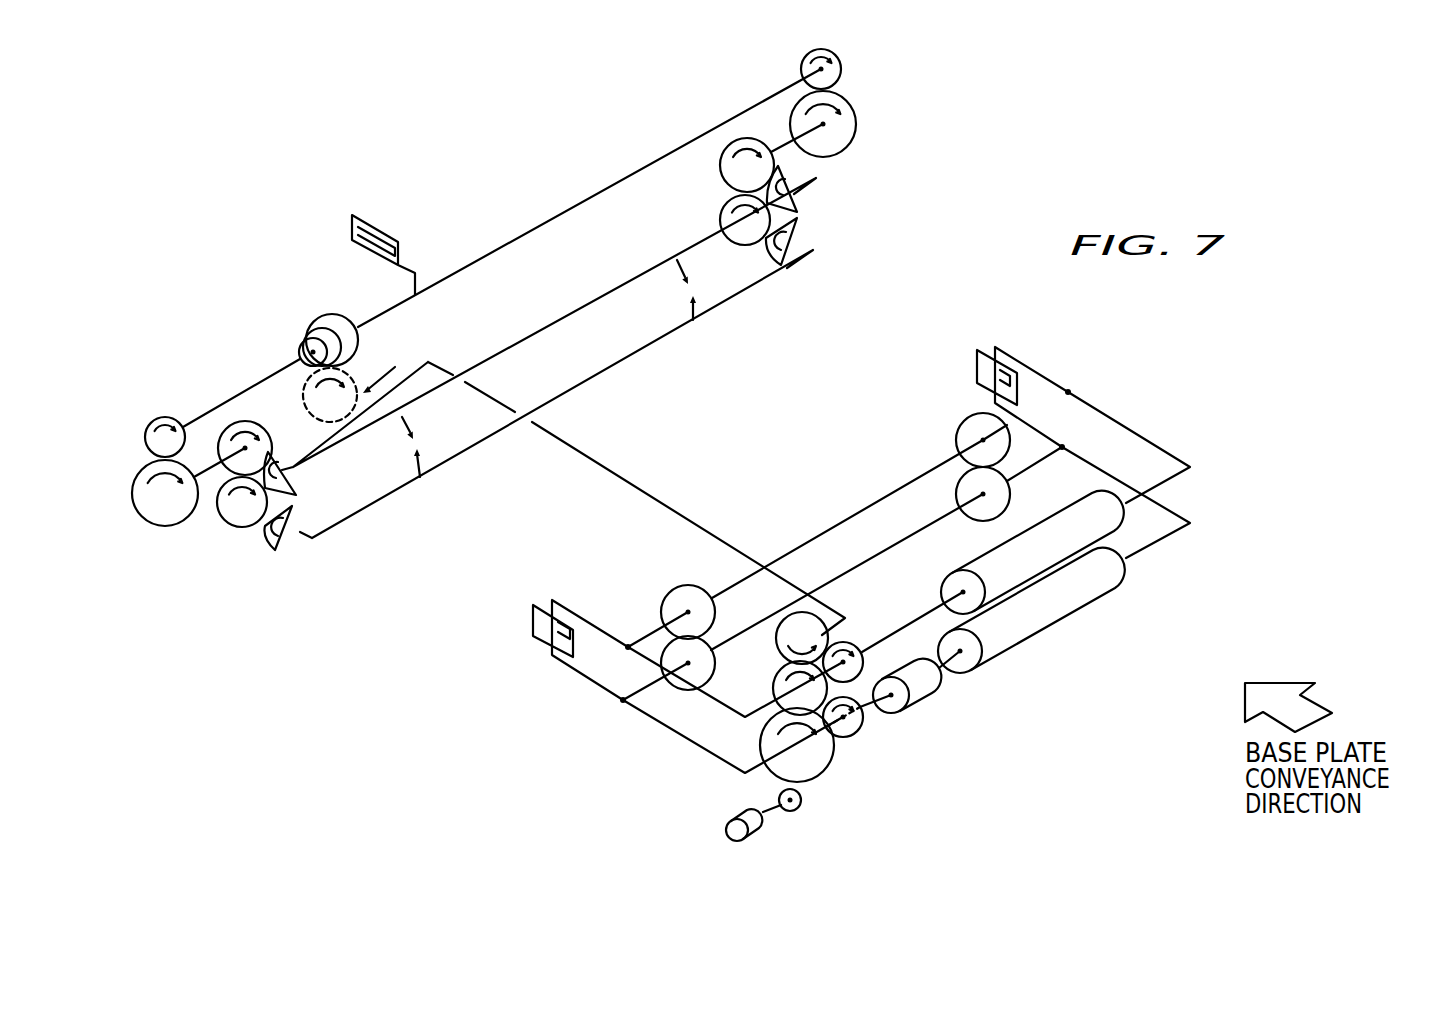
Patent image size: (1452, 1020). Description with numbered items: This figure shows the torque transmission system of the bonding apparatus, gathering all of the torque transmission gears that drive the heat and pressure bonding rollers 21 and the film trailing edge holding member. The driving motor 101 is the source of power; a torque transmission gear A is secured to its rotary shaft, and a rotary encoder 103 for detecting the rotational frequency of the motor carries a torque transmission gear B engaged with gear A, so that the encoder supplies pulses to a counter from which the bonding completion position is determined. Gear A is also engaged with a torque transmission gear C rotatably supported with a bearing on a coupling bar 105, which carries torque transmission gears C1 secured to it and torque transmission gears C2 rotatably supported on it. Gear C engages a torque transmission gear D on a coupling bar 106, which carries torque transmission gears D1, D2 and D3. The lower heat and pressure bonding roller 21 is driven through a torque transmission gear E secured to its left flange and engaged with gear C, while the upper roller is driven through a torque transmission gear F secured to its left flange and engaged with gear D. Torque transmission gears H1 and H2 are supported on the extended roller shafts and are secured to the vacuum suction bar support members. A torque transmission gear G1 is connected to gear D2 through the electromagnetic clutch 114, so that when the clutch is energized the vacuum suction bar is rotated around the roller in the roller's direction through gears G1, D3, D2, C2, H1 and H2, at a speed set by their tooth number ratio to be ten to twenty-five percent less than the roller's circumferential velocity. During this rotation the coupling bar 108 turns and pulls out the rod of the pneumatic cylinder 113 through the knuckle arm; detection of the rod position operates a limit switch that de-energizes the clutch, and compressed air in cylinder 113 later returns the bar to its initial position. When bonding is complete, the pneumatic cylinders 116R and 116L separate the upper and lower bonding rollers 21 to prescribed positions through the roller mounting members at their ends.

The coupling bar 108 is at (627, 176).
The pneumatic cylinder 113 is at (371, 224).
The electromagnetic clutch 114 is at (316, 320).
The pneumatic cylinder 116L is at (530, 632).
The pneumatic cylinder 116R is at (975, 372).
The coupling bar 105 is at (910, 537).
The coupling bar 106 is at (790, 557).
The heat and pressure bonding roller 21 is at (1105, 527).
The driving motor 101 is at (919, 712).
The rotary encoder 103 is at (749, 835).
The torque transmission gear G1 is at (163, 418).
The torque transmission gear D3 is at (183, 508).
The torque transmission gear D2 is at (262, 430).
The torque transmission gear C2 is at (237, 522).
The torque transmission gear H1 is at (298, 487).
The torque transmission gear H2 is at (275, 552).
The torque transmission gear D is at (355, 385).
The torque transmission gear D1 is at (665, 600).
The torque transmission gear C1 is at (677, 690).
The torque transmission gear F is at (850, 643).
The torque transmission gear C is at (773, 687).
The torque transmission gear E is at (858, 738).
The torque transmission gear A is at (833, 775).
The torque transmission gear B is at (802, 805).